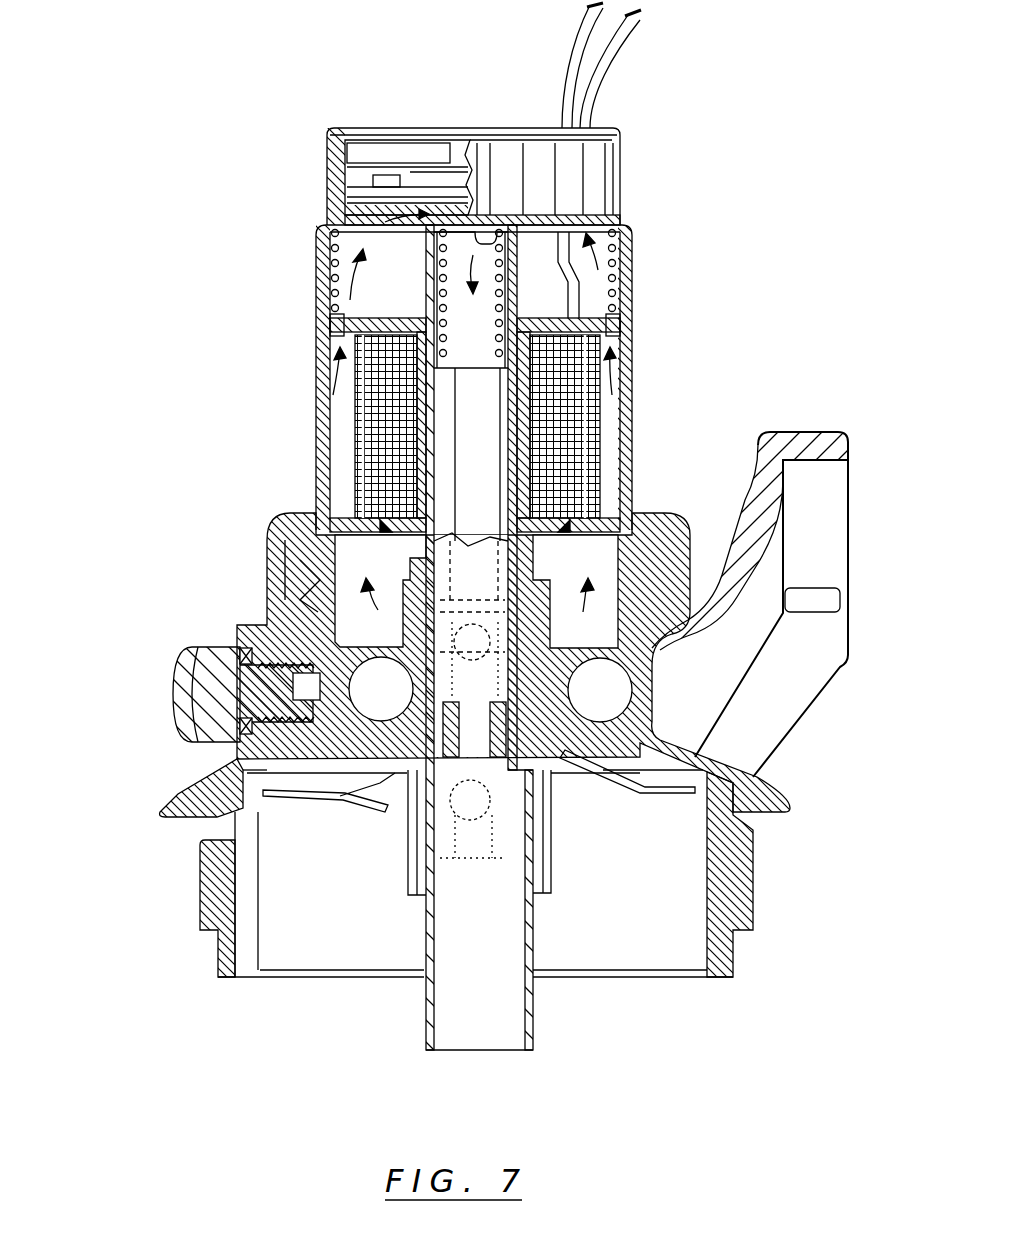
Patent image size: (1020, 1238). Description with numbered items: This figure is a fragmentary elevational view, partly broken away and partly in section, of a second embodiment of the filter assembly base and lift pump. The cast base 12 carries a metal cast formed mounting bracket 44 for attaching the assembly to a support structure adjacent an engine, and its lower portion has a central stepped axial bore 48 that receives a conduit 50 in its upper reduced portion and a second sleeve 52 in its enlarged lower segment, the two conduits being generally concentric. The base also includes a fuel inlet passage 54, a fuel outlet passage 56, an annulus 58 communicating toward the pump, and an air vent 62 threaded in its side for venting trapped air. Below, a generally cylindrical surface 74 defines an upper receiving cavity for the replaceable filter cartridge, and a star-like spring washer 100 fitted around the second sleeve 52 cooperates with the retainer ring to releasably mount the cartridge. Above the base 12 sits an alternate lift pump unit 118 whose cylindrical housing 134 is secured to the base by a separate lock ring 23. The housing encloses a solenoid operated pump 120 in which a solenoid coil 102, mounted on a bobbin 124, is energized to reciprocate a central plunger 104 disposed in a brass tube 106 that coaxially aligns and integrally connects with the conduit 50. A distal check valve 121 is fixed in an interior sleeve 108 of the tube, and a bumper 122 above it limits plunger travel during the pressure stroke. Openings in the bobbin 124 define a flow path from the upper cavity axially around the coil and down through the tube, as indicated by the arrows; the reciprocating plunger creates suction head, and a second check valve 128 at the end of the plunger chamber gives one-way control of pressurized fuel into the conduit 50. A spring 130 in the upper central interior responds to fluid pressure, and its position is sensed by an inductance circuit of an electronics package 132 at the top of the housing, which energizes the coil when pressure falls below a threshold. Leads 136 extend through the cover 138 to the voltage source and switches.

The base 12 is at (175, 795).
The lock ring 23 is at (268, 530).
The mounting bracket 44 is at (835, 490).
The central stepped axial bore 48 is at (627, 710).
The conduit 50 is at (533, 1023).
The second sleeve 52 is at (552, 873).
The fuel inlet passage 54 is at (650, 652).
The fuel outlet passage 56 is at (405, 703).
The annulus 58 is at (394, 571).
The air vent 62 is at (222, 645).
The cylindrical surface 74 is at (706, 917).
The spring washer 100 is at (338, 812).
The solenoid coil 102 is at (583, 383).
The plunger 104 is at (471, 299).
The brass tube 106 is at (427, 272).
The interior sleeve 108 is at (438, 858).
The lift pump unit 118 is at (182, 282).
The solenoid operated pump 120 is at (338, 405).
The distal check valve 121 is at (478, 800).
The bumper 122 is at (498, 739).
The bobbin 124 is at (330, 356).
The second check valve 128 is at (457, 645).
The spring 130 is at (335, 282).
The electronics package 132 is at (370, 150).
The cylindrical housing 134 is at (632, 280).
The leads 136 is at (612, 52).
The cover 138 is at (612, 163).